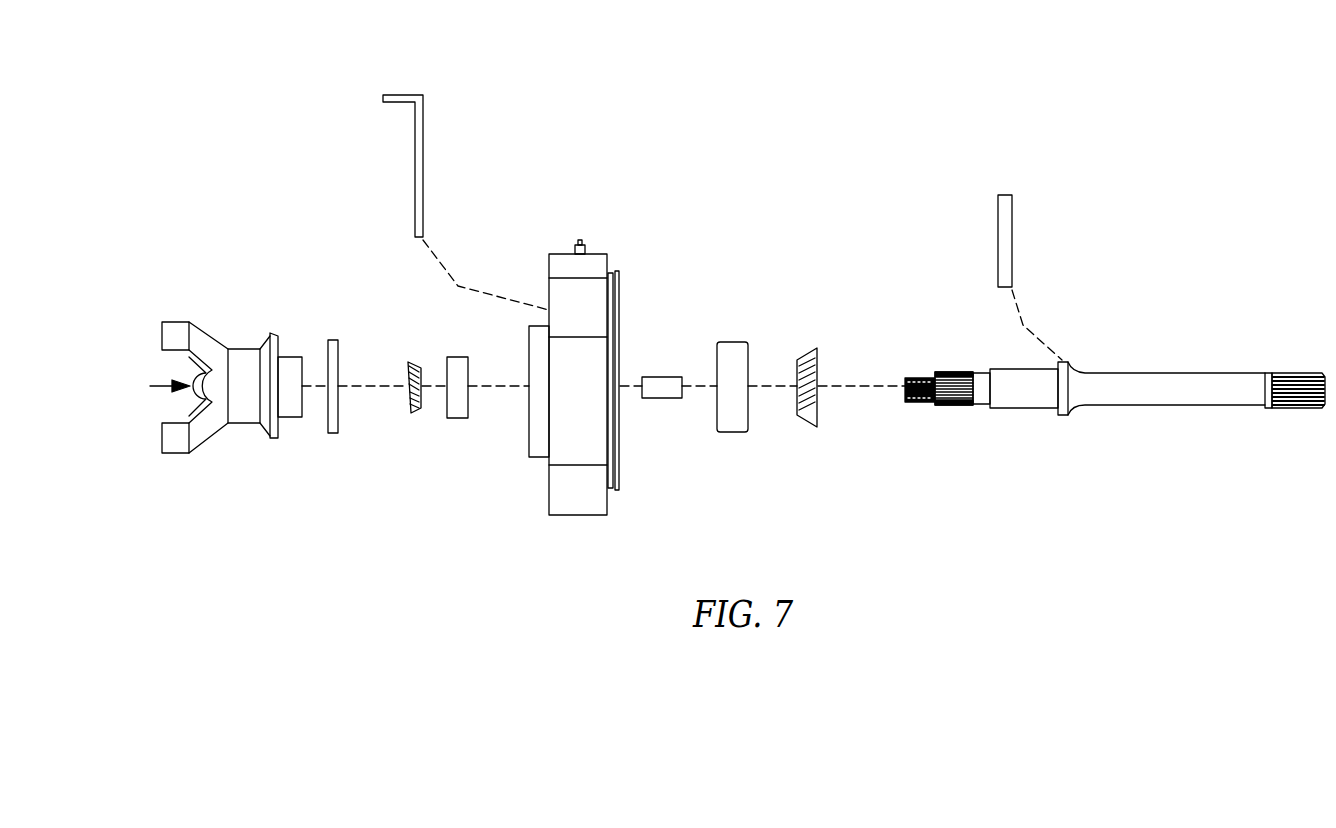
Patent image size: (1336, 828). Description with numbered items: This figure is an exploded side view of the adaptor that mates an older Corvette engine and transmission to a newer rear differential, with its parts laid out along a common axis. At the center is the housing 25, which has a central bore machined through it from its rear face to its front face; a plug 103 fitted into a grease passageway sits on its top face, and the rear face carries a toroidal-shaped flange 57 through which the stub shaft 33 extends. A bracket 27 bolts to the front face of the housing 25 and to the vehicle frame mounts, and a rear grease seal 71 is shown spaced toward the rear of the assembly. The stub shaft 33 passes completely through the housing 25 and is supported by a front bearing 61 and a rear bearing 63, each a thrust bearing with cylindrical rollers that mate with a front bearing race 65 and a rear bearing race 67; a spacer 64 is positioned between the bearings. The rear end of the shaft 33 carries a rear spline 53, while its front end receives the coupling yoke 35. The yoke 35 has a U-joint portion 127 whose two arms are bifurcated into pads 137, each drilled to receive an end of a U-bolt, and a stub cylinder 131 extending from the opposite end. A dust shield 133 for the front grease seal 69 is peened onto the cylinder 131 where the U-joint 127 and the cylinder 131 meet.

The housing 25 is at (563, 253).
The bracket 27 is at (423, 140).
The stub shaft 33 is at (1160, 405).
The coupling yoke 35 is at (212, 340).
The rear spline 53 is at (1290, 372).
The toroidal-shaped flange 57 is at (618, 350).
The front bearing 61 is at (415, 365).
The rear bearing 63 is at (805, 428).
The spacer 64 is at (650, 400).
The front bearing race 65 is at (458, 418).
The rear bearing race 67 is at (740, 345).
The front grease seal 69 is at (332, 435).
The rear grease seal 71 is at (1012, 222).
The plug 103 is at (580, 243).
The U-joint portion 127 is at (161, 382).
The stub cylinder 131 is at (288, 408).
The dust shield 133 is at (276, 330).
The pads 137 is at (176, 325).